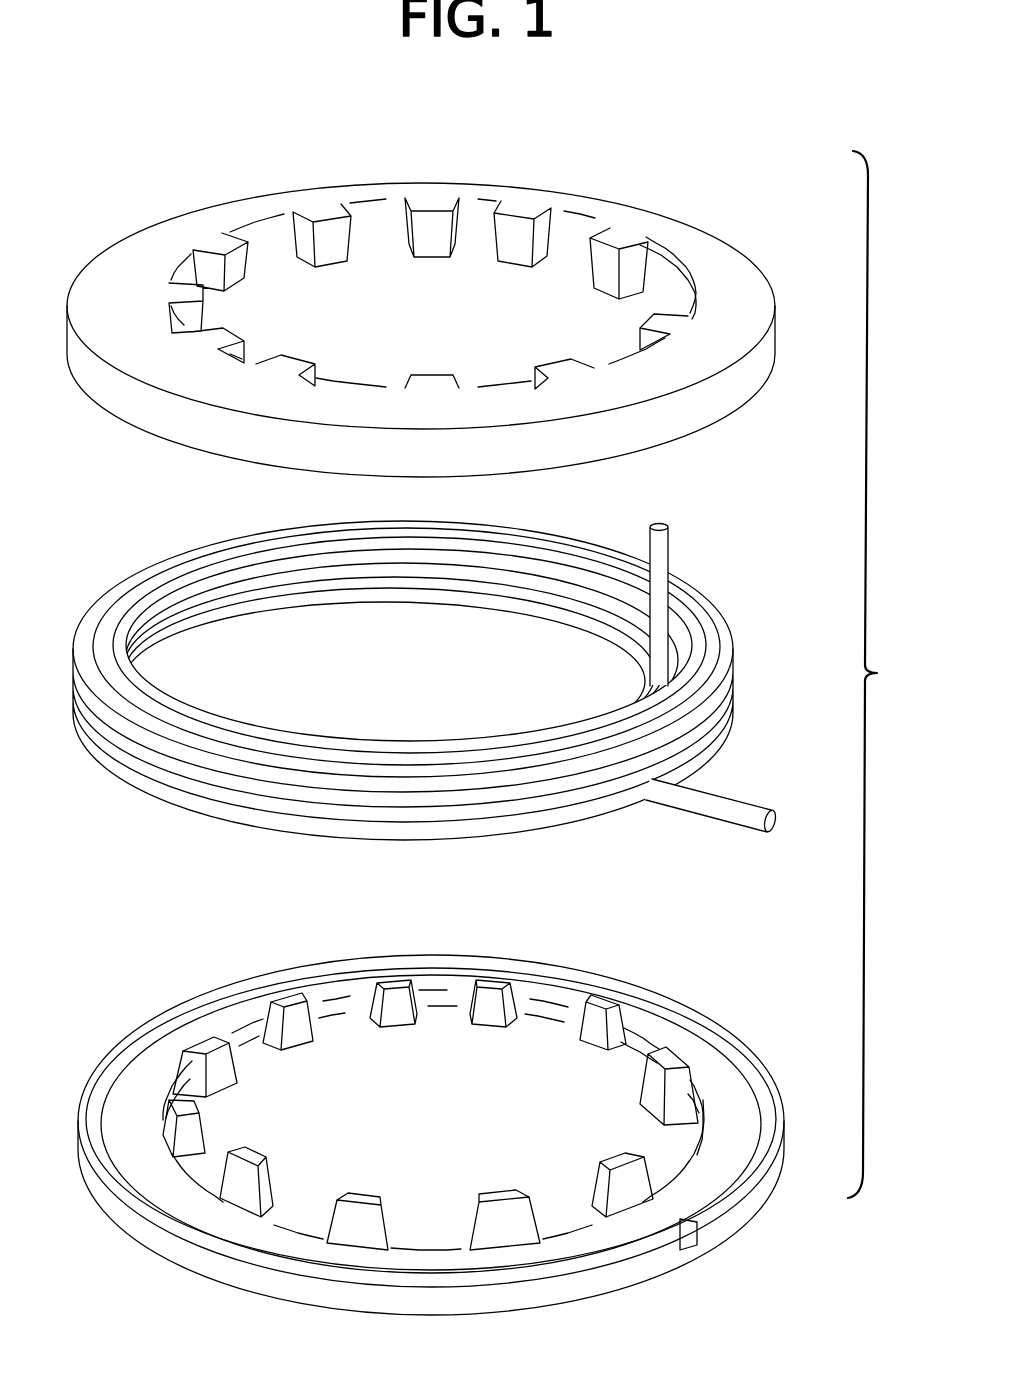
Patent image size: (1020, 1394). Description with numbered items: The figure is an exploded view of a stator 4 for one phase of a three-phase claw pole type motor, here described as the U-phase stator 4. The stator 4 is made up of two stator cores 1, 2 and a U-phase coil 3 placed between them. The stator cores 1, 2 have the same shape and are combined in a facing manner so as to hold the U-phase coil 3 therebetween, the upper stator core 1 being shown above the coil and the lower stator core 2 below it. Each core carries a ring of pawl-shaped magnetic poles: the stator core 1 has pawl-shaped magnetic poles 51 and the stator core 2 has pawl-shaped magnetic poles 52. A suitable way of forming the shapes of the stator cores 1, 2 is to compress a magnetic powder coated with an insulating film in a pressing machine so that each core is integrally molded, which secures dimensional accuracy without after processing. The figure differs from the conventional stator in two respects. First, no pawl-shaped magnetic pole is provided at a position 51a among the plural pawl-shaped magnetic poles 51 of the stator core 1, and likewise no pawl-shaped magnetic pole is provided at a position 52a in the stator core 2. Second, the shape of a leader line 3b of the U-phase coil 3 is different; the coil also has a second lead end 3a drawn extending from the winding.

The stator core 1 is at (427, 311).
The stator core 2 is at (431, 1107).
The U-phase coil 3 is at (439, 656).
The coil lead end 3a is at (758, 806).
The leader line 3b is at (670, 545).
The stator 4 is at (486, 730).
The pawl-shaped magnetic poles 51 is at (425, 245).
The position 51a is at (690, 262).
The pawl-shaped magnetic poles 52 is at (496, 1003).
The position 52a is at (693, 1143).